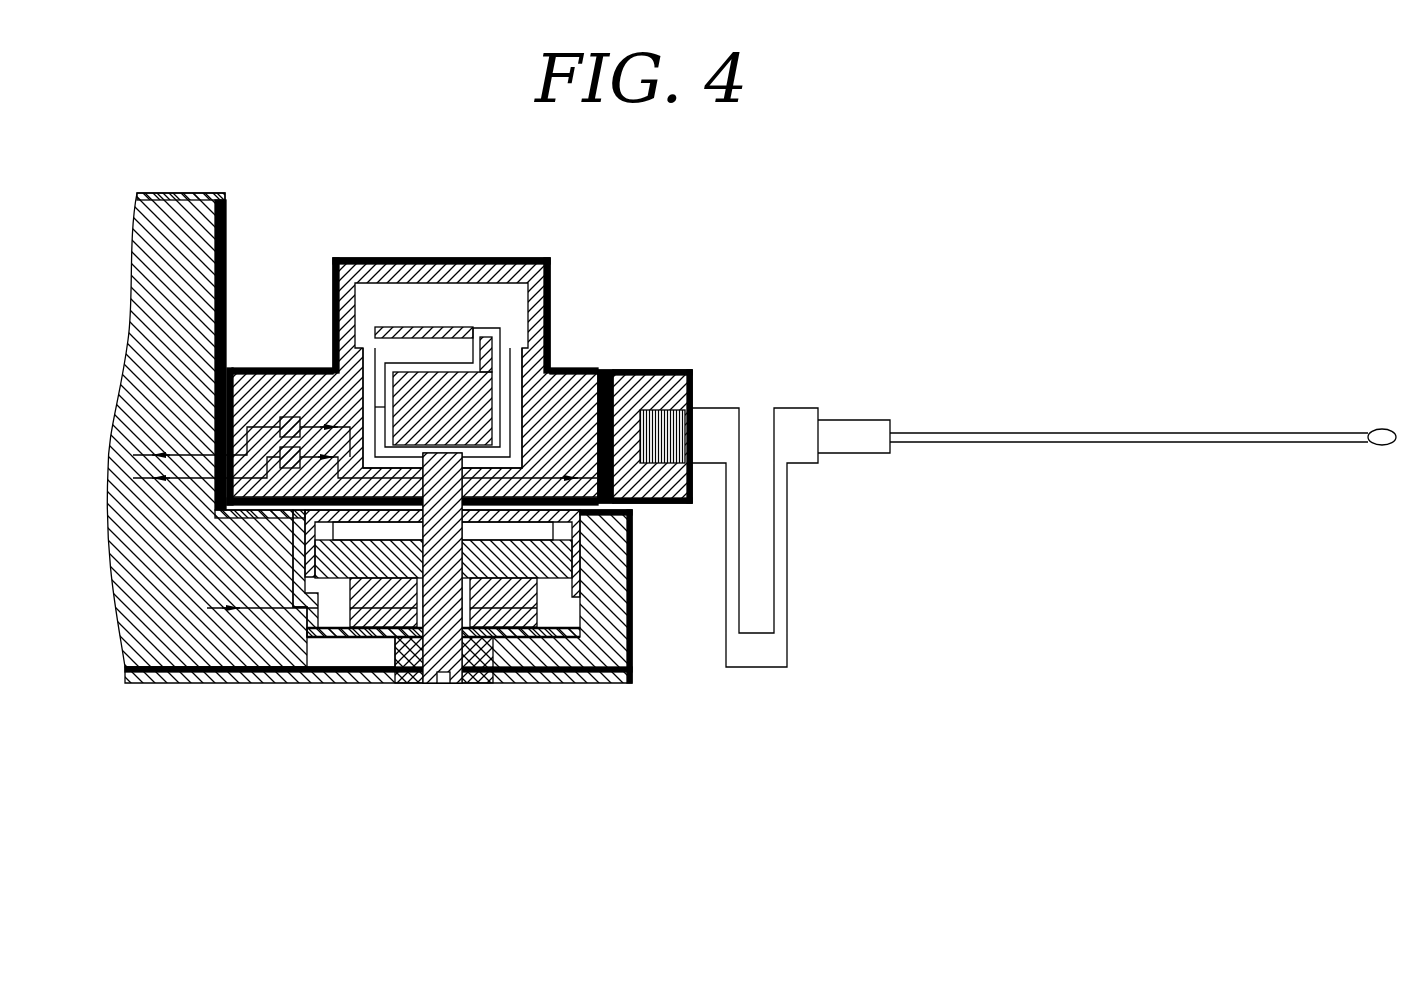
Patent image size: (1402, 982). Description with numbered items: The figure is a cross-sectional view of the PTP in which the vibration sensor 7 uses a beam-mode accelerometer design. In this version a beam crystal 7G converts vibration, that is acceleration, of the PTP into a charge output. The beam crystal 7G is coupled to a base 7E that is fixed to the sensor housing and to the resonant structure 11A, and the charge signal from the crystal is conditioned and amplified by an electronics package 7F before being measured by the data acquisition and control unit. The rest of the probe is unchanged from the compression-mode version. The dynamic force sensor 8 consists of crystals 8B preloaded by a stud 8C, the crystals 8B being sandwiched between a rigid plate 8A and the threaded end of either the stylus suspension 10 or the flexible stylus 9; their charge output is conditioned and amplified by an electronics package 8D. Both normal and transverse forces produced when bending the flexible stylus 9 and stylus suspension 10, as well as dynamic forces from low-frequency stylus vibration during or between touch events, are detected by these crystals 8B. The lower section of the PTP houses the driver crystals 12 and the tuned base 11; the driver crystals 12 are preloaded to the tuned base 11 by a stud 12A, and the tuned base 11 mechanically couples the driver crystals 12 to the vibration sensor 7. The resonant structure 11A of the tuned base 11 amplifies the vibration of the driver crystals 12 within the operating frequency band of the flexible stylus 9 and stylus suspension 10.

The vibration sensor 7 is at (428, 198).
The base 7E is at (500, 365).
The electronics package 7F is at (288, 418).
The beam crystal 7G is at (401, 327).
The dynamic force sensor 8 is at (728, 364).
The rigid plate 8A is at (606, 370).
The crystals 8B is at (640, 371).
The stud 8C is at (674, 410).
The electronics package 8D is at (281, 512).
The flexible stylus 9 is at (1213, 395).
The stylus suspension 10 is at (848, 578).
The tuned base 11 is at (568, 725).
The resonant structure 11A is at (572, 557).
The driver crystals 12 is at (357, 664).
The stud 12A is at (459, 684).